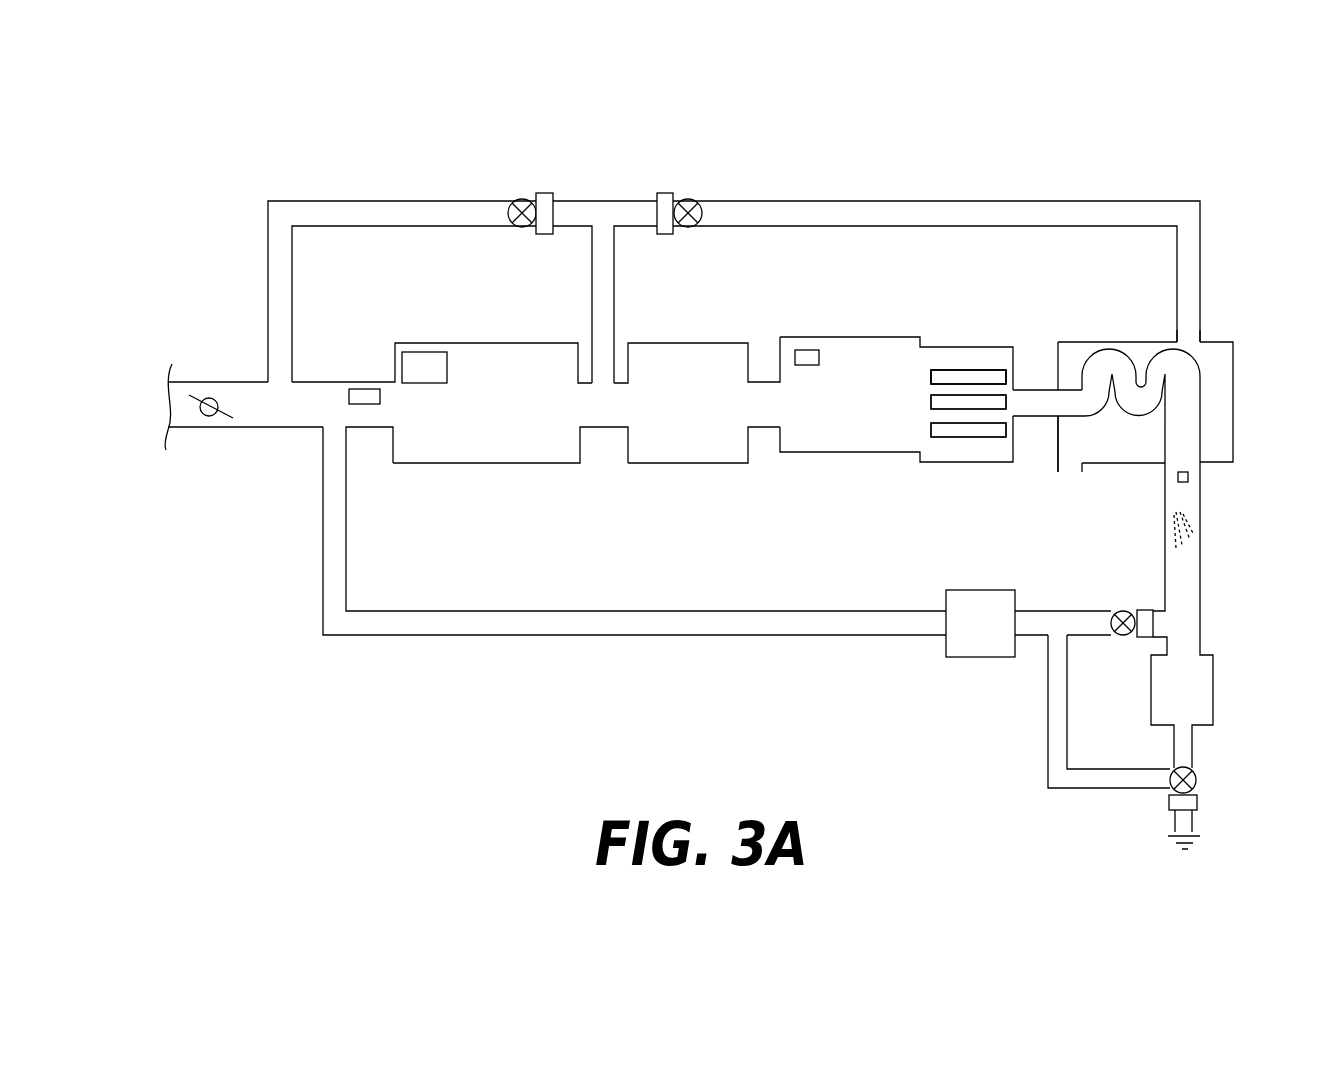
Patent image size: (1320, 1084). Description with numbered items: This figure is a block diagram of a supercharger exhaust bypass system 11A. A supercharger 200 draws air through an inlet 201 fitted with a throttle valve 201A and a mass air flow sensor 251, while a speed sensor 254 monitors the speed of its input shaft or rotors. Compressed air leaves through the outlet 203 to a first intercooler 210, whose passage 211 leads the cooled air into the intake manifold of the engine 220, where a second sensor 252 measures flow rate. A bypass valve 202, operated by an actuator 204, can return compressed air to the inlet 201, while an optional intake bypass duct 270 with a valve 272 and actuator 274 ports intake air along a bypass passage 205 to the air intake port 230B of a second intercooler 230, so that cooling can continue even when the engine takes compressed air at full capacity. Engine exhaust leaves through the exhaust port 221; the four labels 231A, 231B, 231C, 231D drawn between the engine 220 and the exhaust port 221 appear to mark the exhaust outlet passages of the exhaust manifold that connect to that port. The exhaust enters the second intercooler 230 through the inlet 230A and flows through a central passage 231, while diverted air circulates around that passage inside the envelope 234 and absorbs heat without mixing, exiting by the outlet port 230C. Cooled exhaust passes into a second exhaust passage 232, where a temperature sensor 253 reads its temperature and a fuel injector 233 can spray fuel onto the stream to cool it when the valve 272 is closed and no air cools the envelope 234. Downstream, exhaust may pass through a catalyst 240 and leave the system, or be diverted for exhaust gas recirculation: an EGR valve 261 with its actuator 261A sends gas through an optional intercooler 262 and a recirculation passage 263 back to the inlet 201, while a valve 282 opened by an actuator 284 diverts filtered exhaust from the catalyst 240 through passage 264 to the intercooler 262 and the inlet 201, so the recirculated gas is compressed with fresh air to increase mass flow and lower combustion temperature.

The supercharger exhaust bypass system 11A is at (212, 238).
The supercharger 200 is at (500, 343).
The inlet 201 is at (362, 429).
The throttle valve 201A is at (212, 398).
The bypass valve 202 is at (519, 200).
The outlet 203 is at (587, 429).
The actuator 204 is at (545, 234).
The bypass passage 205 is at (852, 201).
The first intercooler 210 is at (678, 343).
The passage 211 is at (768, 429).
The engine 220 is at (857, 337).
The exhaust port 221 is at (1020, 390).
The second intercooler 230 is at (1098, 342).
The inlet 230A is at (1045, 407).
The inlet port 230B is at (1201, 327).
The outlet port 230C is at (1163, 465).
The central passage 231 is at (1193, 424).
The heating element 231A is at (944, 357).
The heating element 231B is at (960, 389).
The heating element 231C is at (950, 416).
The heating element 231D is at (982, 445).
The second exhaust passage 232 is at (1201, 554).
The fuel injector 233 is at (1163, 513).
The envelope 234 is at (1224, 386).
The catalyst 240 is at (1215, 686).
The sensor 251 is at (364, 389).
The sensor 252 is at (807, 350).
The sensor 253 is at (1189, 477).
The sensor 254 is at (424, 367).
The EGR valve 261 is at (1122, 637).
The actuator 261A is at (1146, 610).
The intercooler 262 is at (968, 590).
The recirculation passage 263 is at (597, 611).
The passage 264 is at (1048, 689).
The intake bypass duct 270 is at (428, 201).
The valve 272 is at (690, 201).
The actuator 274 is at (661, 194).
The valve 282 is at (1198, 778).
The actuator 284 is at (1198, 803).